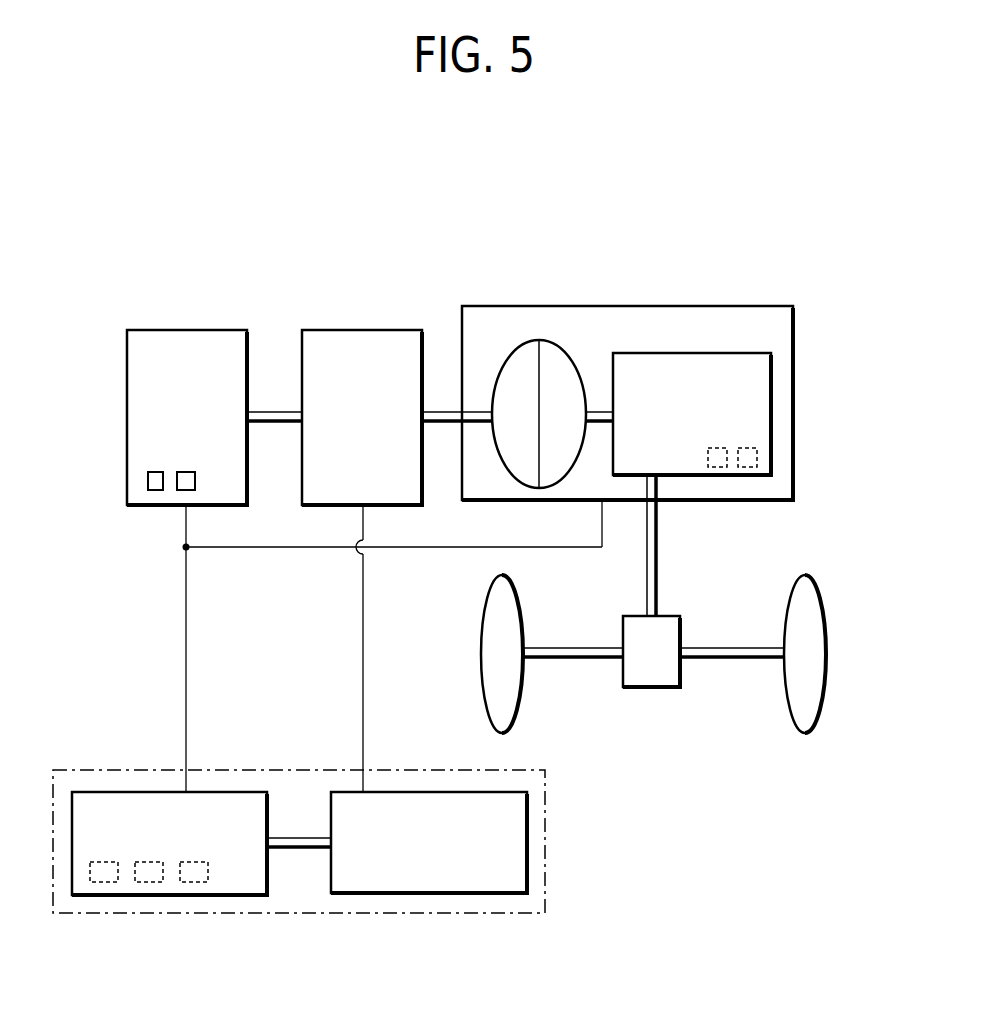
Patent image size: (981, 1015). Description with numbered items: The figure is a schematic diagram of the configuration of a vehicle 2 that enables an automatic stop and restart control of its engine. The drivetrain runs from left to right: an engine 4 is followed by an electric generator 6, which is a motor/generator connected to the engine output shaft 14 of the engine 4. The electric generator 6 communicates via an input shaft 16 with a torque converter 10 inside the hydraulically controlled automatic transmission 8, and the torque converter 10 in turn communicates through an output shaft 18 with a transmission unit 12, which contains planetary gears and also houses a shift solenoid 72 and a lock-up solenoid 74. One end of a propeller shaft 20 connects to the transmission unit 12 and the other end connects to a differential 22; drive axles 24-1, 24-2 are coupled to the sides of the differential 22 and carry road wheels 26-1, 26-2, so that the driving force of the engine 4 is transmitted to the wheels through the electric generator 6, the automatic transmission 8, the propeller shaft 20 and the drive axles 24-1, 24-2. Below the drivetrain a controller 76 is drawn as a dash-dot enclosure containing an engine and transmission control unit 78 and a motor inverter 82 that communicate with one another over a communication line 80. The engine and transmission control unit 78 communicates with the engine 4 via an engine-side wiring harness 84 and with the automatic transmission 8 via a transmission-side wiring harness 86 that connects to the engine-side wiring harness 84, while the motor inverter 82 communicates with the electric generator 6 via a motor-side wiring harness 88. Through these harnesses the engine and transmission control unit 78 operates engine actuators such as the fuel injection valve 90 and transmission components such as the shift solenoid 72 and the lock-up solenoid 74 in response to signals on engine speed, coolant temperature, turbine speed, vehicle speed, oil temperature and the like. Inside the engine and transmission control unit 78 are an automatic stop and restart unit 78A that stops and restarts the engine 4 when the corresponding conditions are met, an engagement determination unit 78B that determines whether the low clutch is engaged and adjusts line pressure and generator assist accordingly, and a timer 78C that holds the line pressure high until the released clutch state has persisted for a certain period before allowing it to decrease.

The vehicle 2 is at (797, 200).
The engine 4 is at (152, 330).
The electric generator 6 is at (326, 330).
The automatic transmission 8 is at (738, 302).
The torque converter 10 is at (511, 345).
The transmission unit 12 is at (645, 352).
The engine output shaft 14 is at (277, 410).
The input shaft 16 is at (445, 410).
The output shaft 18 is at (594, 408).
The propeller shaft 20 is at (646, 584).
The differential 22 is at (650, 688).
The drive axle 24-1 is at (733, 659).
The drive axle 24-2 is at (572, 659).
The road wheel 26-1 is at (824, 598).
The road wheel 26-2 is at (483, 603).
The shift solenoid 72 is at (714, 468).
The lock-up solenoid 74 is at (753, 468).
The controller 76 is at (550, 847).
The engine and transmission control unit 78 is at (253, 897).
The automatic stop and restart unit 78A is at (96, 884).
The engagement determination unit 78B is at (147, 884).
The timer 78C is at (195, 884).
The communication line 80 is at (297, 850).
The motor inverter 82 is at (482, 895).
The engine-side wiring harness 84 is at (186, 614).
The transmission-side wiring harness 86 is at (240, 548).
The motor-side wiring harness 88 is at (148, 484).
The fuel injection valve 90 is at (184, 492).